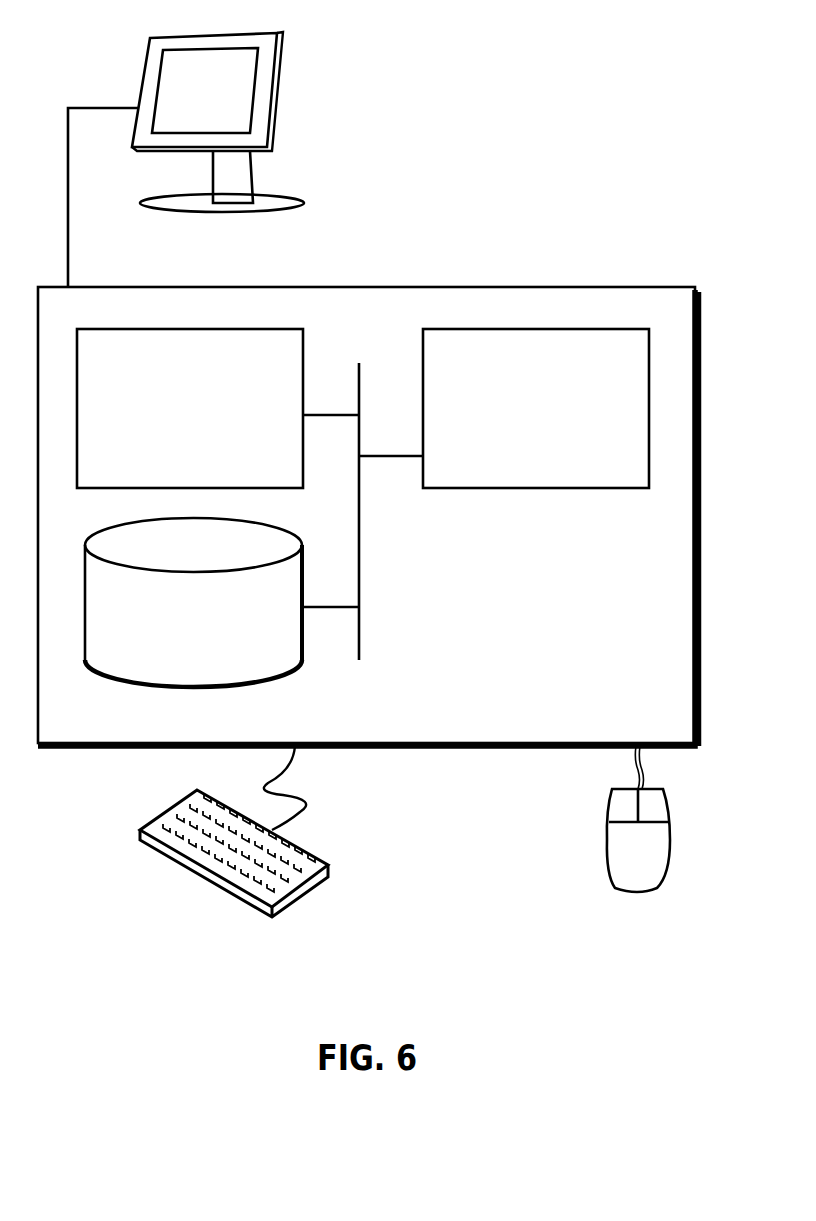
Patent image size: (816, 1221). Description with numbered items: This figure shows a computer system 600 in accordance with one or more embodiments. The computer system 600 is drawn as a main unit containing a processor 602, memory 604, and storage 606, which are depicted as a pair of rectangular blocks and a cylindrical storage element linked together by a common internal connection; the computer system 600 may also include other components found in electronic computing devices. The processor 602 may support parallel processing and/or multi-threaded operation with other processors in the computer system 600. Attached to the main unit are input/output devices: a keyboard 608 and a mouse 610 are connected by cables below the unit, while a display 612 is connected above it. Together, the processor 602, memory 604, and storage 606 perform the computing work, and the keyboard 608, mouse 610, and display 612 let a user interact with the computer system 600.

The computer system 600 is at (413, 265).
The processor 602 is at (518, 422).
The memory 604 is at (168, 422).
The storage 606 is at (175, 632).
The keyboard 608 is at (160, 853).
The mouse 610 is at (615, 864).
The display 612 is at (186, 159).